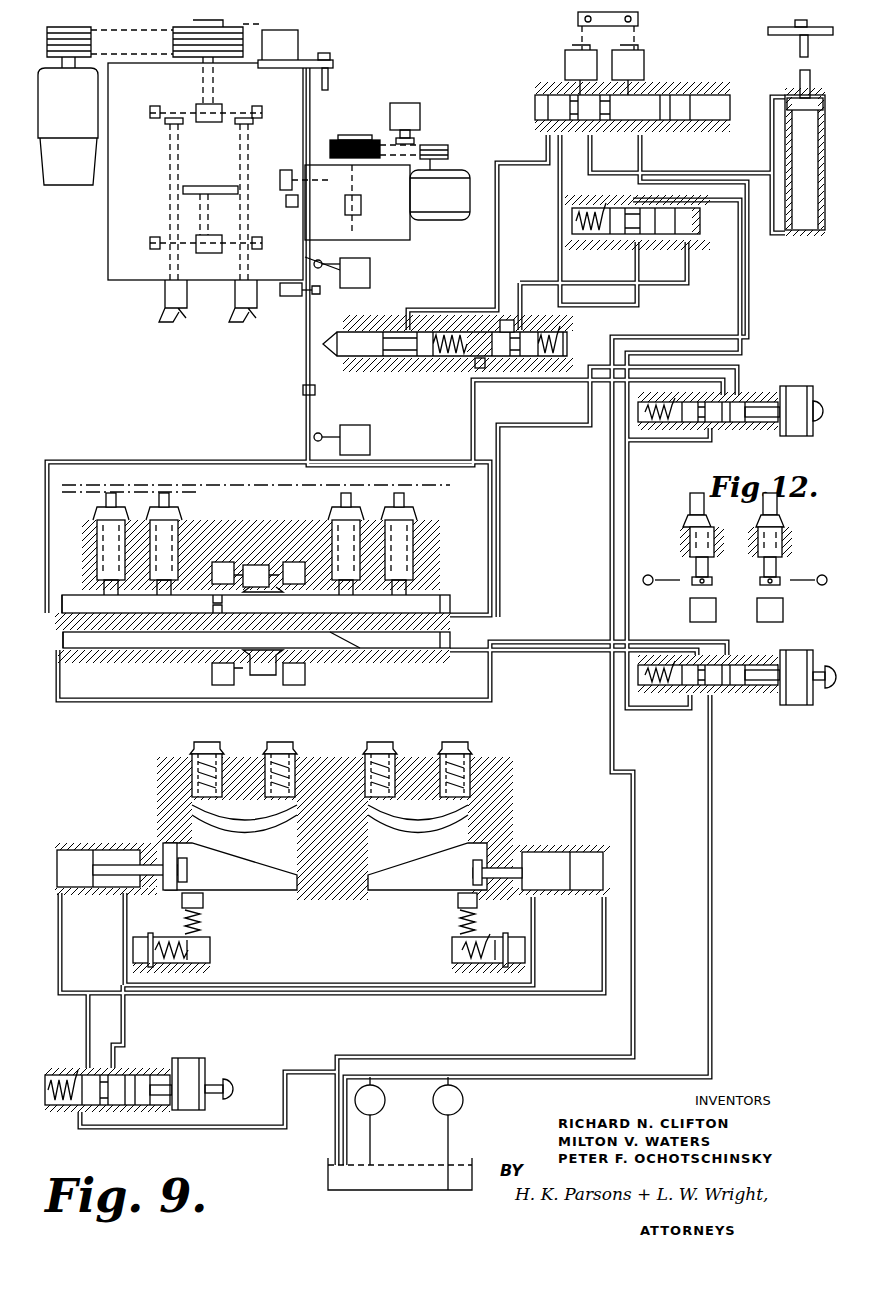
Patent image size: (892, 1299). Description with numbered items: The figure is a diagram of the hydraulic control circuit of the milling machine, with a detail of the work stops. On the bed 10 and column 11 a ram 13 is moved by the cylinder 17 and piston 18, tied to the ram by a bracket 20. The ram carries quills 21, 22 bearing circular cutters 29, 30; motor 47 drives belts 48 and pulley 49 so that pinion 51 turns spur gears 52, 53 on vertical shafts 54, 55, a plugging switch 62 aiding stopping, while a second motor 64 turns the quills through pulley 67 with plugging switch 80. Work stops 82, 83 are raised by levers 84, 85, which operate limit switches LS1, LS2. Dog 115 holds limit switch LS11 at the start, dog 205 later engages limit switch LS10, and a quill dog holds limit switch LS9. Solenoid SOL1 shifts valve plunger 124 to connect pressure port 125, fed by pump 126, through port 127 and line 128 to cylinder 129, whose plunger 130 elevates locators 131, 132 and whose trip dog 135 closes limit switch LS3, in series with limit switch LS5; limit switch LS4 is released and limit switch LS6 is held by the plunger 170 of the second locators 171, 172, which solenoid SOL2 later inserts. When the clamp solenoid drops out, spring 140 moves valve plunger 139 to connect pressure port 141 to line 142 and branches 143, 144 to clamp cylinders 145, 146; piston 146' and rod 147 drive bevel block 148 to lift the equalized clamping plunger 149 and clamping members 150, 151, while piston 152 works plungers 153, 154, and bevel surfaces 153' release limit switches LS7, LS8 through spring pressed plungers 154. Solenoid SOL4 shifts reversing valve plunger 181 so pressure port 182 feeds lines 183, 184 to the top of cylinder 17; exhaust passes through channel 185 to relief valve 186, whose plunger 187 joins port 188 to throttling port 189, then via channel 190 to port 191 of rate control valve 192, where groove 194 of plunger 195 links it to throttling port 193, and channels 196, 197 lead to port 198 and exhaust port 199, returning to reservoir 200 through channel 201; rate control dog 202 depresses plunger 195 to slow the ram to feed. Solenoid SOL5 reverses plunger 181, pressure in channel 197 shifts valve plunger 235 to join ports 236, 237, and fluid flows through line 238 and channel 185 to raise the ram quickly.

In FIG. 9, the bed 10 is at (445, 521).
In FIG. 9, the column 11 is at (800, 235).
In FIG. 9, the ram 13 is at (108, 280).
In FIG. 9, the cylinder 17 is at (822, 200).
In FIG. 9, the piston 18 is at (805, 92).
In FIG. 9, the bracket 20 is at (333, 64).
In FIG. 9, the quill 21 is at (252, 260).
In FIG. 9, the quill 22 is at (168, 260).
In FIG. 9, the circular cutter 29 is at (248, 335).
In FIG. 9, the circular cutter 30 is at (172, 335).
In FIG. 9, the motor 47 is at (72, 178).
In FIG. 9, the belts 48 is at (85, 29).
In FIG. 9, the pulley 49 is at (178, 27).
In FIG. 9, the pinion 51 is at (216, 104).
In FIG. 9, the spur gear 52 is at (155, 106).
In FIG. 9, the spur gear 53 is at (262, 108).
In FIG. 9, the vertical shaft 54 is at (168, 170).
In FIG. 9, the vertical shaft 55 is at (248, 160).
In FIG. 9, the plugging switch 62 is at (298, 42).
In FIG. 9, the second electric motor 64 is at (452, 175).
In FIG. 9, the pulley 67 is at (335, 148).
In FIG. 9, the plugging switch 80 is at (420, 115).
In FIG. 12, the first stop 82 is at (690, 510).
In FIG. 12, the second stop 83 is at (780, 510).
In FIG. 12, the control lever 84 is at (655, 576).
In FIG. 12, the control lever 85 is at (812, 576).
In FIG. 9, the dog 115 is at (305, 256).
In FIG. 9, the valve plunger 124 is at (768, 395).
In FIG. 9, the pressure port 125 is at (720, 430).
In FIG. 9, the pump 126 is at (463, 1100).
In FIG. 9, the port 127 is at (738, 392).
In FIG. 9, the line 128 is at (498, 440).
In FIG. 9, the cylinder 129 is at (450, 593).
In FIG. 9, the plunger 130 is at (455, 603).
In FIG. 9, the work locator 131 is at (100, 503).
In FIG. 9, the work locator 132 is at (330, 505).
In FIG. 9, the trip dog 135 is at (256, 565).
In FIG. 9, the valve plunger 139 is at (148, 1068).
In FIG. 9, the operating spring 140 is at (60, 1070).
In FIG. 9, the pressure port 141 is at (80, 1105).
In FIG. 9, the line 142 is at (86, 1032).
In FIG. 9, the branch connection 143 is at (62, 950).
In FIG. 9, the branch connection 144 is at (572, 1000).
In FIG. 9, the clamp operating cylinder 145 is at (103, 850).
In FIG. 9, the clamp operating cylinder 146 is at (541, 852).
In FIG. 9, the piston 146' is at (66, 848).
In FIG. 9, the piston rod 147 is at (120, 865).
In FIG. 9, the bevel block 148 is at (255, 890).
In FIG. 9, the equalized clamping plunger 149 is at (240, 820).
In FIG. 9, the clamping member 150 is at (200, 742).
In FIG. 9, the clamping member 151 is at (282, 742).
In FIG. 9, the piston 152 is at (578, 862).
In FIG. 9, the work clamping plunger 153 is at (395, 755).
In FIG. 9, the bevel surfaces 153' is at (325, 894).
In FIG. 9, the work clamping plunger 154 is at (457, 742).
In FIG. 9, the plunger 170 is at (427, 650).
In FIG. 9, the locator 171 is at (178, 503).
In FIG. 9, the locator 172 is at (402, 505).
In FIG. 9, the reversing valve plunger 181 is at (700, 92).
In FIG. 9, the pressure port 182 is at (546, 148).
In FIG. 9, the line 183 is at (558, 222).
In FIG. 9, the line 184 is at (590, 172).
In FIG. 9, the channel 185 is at (750, 260).
In FIG. 9, the pressure relief valve 186 is at (595, 245).
In FIG. 9, the plunger 187 is at (705, 240).
In FIG. 9, the port 188 is at (602, 207).
In FIG. 9, the throttling port 189 is at (660, 245).
In FIG. 9, the channel 190 is at (490, 290).
In FIG. 9, the port 191 is at (415, 330).
In FIG. 9, the rate control valve 192 is at (405, 360).
In FIG. 9, the throttling port 193 is at (378, 328).
In FIG. 9, the groove 194 is at (400, 360).
In FIG. 9, the valve plunger 195 is at (337, 360).
In FIG. 9, the channel 196 is at (392, 318).
In FIG. 9, the channel 197 is at (497, 250).
In FIG. 9, the port 198 is at (645, 140).
In FIG. 9, the exhaust port 199 is at (705, 125).
In FIG. 9, the reservoir 200 is at (472, 1175).
In FIG. 9, the channel 201 is at (760, 173).
In FIG. 9, the rate control dog 202 is at (312, 292).
In FIG. 9, the dog 205 is at (303, 392).
In FIG. 9, the valve plunger 235 is at (515, 360).
In FIG. 9, the port 236 is at (504, 320).
In FIG. 9, the port 237 is at (530, 328).
In FIG. 9, the line 238 is at (637, 305).
In FIG. 12, the limit switch LS1 is at (690, 612).
In FIG. 12, the limit switch LS2 is at (783, 612).
In FIG. 9, the limit switch LS3 is at (228, 586).
In FIG. 9, the limit switch LS4 is at (292, 586).
In FIG. 9, the limit switch LS5 is at (305, 675).
In FIG. 9, the limit switch LS6 is at (212, 675).
In FIG. 9, the limit switch LS7 is at (135, 945).
In FIG. 9, the limit switch LS8 is at (525, 955).
In FIG. 9, the limit switch LS9 is at (285, 297).
In FIG. 9, the limit switch LS10 is at (370, 444).
In FIG. 9, the limit switch LS11 is at (370, 268).
In FIG. 9, the work locator control solenoid SOL1 is at (801, 411).
In FIG. 9, the solenoid SOL2 is at (737, 677).
In FIG. 9, the solenoid SOL4 is at (565, 66).
In FIG. 9, the solenoid SOL5 is at (644, 66).